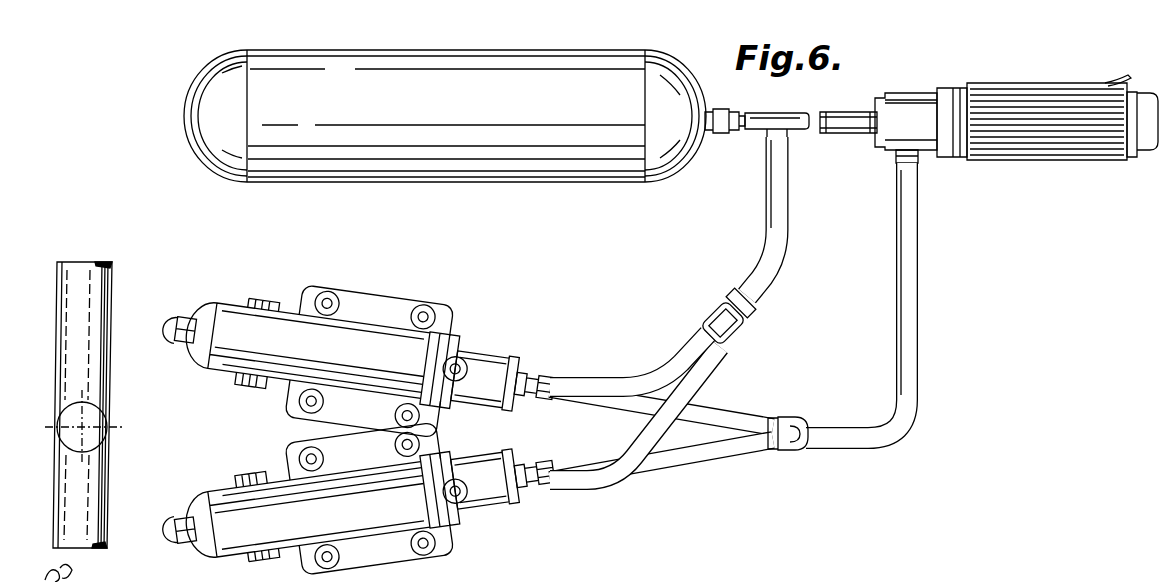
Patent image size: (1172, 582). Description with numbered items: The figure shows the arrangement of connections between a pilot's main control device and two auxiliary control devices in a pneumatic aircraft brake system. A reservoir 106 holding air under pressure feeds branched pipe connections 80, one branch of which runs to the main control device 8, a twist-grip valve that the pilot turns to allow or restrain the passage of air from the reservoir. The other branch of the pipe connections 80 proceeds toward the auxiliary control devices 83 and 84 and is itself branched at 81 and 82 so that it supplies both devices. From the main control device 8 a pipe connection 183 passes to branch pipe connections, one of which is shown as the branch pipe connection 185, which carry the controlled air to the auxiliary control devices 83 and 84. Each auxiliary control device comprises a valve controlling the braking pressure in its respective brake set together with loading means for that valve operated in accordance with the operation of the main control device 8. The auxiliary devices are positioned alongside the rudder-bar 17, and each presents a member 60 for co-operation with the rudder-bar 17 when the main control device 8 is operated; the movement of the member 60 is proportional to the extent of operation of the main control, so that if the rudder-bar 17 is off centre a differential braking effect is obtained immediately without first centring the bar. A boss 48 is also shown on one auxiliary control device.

The main control device 8 is at (1018, 160).
The rudder-bar 17 is at (112, 468).
The screw boss 48 is at (465, 355).
The member 60 is at (167, 335).
The branched pipe connections 80 is at (790, 182).
The branch 81 is at (681, 332).
The branch 82 is at (722, 366).
The auxiliary control device 83 is at (220, 302).
The auxiliary control device 84 is at (744, 418).
The reservoir 106 is at (457, 183).
The pipe connection 183 is at (914, 282).
The branch pipe connection 185 is at (727, 463).